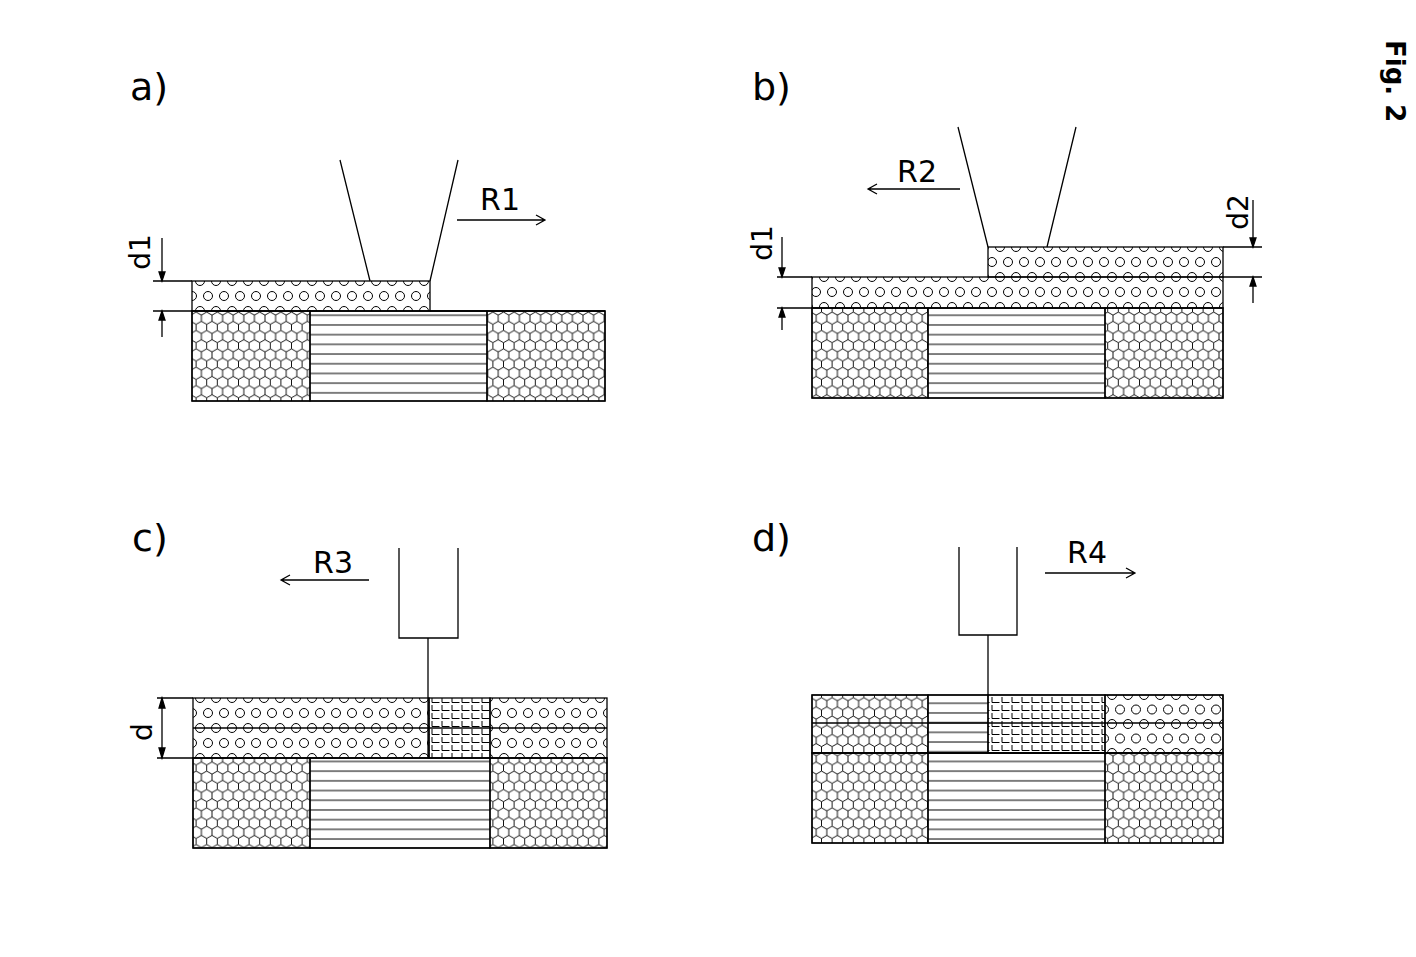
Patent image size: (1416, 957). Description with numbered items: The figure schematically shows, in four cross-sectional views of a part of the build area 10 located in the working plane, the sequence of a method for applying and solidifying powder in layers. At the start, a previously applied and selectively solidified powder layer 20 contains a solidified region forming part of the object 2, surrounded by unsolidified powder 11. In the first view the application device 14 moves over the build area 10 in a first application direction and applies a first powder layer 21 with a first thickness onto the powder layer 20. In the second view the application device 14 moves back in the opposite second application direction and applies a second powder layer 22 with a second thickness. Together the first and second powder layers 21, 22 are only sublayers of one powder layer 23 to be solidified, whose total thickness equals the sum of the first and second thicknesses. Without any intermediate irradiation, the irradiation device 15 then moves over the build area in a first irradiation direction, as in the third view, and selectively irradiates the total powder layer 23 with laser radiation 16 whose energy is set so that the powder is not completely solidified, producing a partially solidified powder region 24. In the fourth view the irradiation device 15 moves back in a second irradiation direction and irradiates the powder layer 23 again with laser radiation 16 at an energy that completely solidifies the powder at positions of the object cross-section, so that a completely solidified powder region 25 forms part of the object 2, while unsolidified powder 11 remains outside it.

The object 2 is at (387, 370).
The build area 10 is at (547, 311).
The unsolidified powder 11 is at (243, 385).
The application device 14 is at (708, 204).
The irradiation device 15 is at (708, 592).
The laser radiation 16 is at (429, 668).
The powder layer 20 is at (203, 340).
The first powder layer 21 is at (293, 287).
The second powder layer 22 is at (1095, 247).
The powder layer to be solidified 23 is at (607, 698).
The partially solidified powder region 24 is at (476, 698).
The completely solidified powder region 25 is at (942, 698).